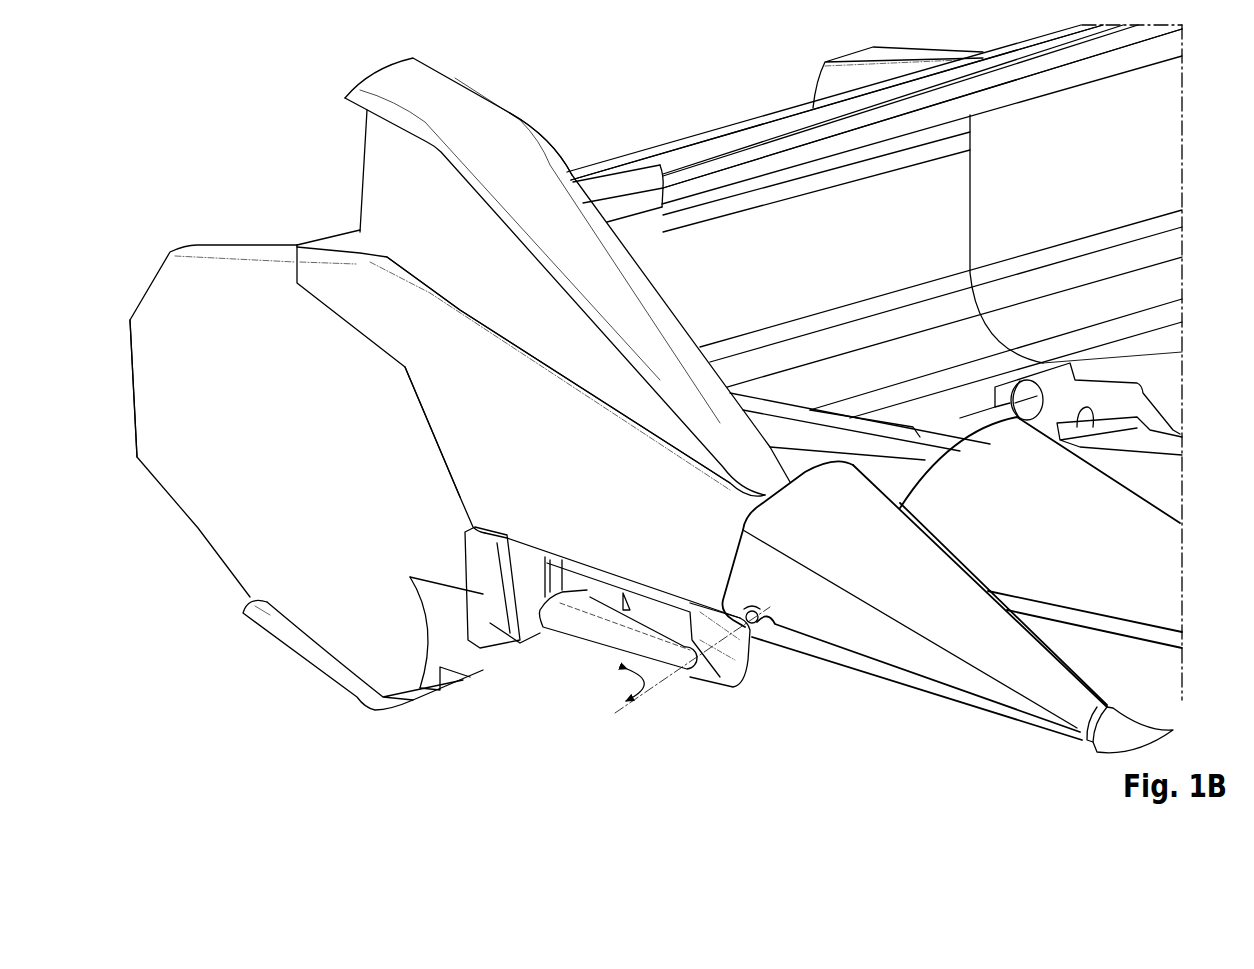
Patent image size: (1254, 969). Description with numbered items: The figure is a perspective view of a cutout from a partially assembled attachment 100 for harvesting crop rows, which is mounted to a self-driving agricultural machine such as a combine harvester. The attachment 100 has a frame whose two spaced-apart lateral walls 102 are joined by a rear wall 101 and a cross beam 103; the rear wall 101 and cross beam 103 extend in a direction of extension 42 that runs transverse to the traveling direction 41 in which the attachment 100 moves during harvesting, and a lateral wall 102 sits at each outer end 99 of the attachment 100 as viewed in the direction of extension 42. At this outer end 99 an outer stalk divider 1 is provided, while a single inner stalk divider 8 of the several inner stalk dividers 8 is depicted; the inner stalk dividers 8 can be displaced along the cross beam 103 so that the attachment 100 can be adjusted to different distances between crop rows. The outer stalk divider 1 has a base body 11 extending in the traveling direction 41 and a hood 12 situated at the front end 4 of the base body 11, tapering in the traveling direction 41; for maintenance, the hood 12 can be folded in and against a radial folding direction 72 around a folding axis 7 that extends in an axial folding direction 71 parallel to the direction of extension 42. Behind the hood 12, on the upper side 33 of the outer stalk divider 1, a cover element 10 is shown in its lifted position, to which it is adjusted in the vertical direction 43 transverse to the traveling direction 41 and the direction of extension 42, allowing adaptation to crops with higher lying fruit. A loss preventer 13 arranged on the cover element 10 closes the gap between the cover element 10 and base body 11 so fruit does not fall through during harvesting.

The outer stalk divider 1 is at (832, 745).
The front end of base body 4 is at (732, 699).
The folding axis 7 is at (667, 670).
The inner stalk divider 8 is at (1112, 598).
The cover element 10 is at (541, 197).
The base body 11 is at (590, 543).
The hood 12 is at (827, 610).
The loss preventer 13 is at (540, 340).
The upper side 33 is at (480, 86).
The traveling direction 41 is at (175, 148).
The direction of extension 42 is at (175, 148).
The vertical direction 43 is at (175, 148).
The axial folding direction 71 is at (622, 693).
The radial folding direction 72 is at (658, 703).
The outer end of attachment 99 is at (131, 266).
The attachment 100 is at (650, 94).
The rear wall 101 is at (745, 172).
The lateral wall 102 is at (220, 515).
The cross beam 103 is at (1117, 428).